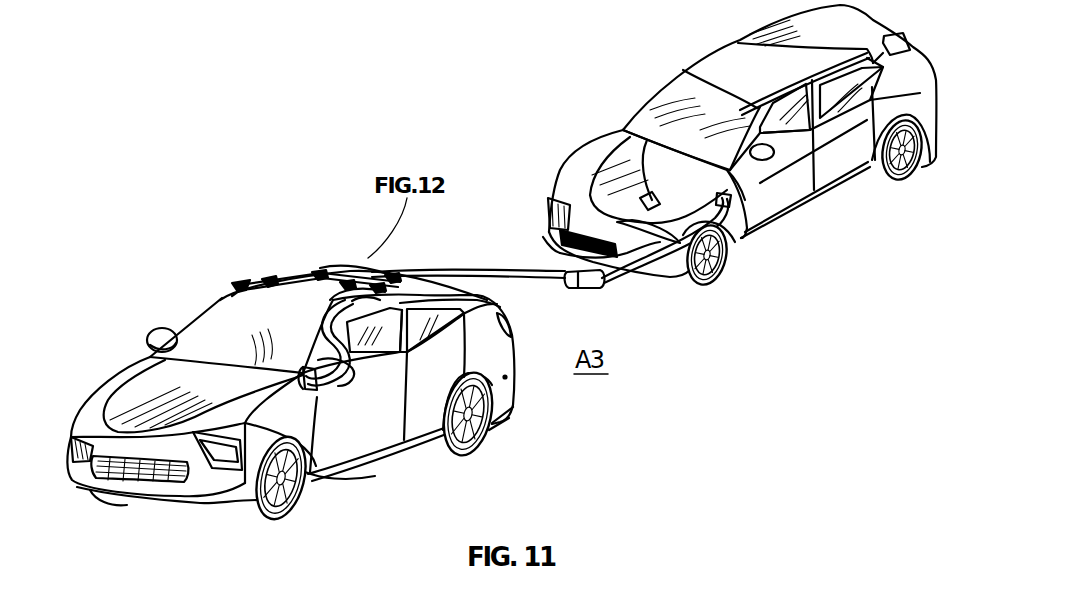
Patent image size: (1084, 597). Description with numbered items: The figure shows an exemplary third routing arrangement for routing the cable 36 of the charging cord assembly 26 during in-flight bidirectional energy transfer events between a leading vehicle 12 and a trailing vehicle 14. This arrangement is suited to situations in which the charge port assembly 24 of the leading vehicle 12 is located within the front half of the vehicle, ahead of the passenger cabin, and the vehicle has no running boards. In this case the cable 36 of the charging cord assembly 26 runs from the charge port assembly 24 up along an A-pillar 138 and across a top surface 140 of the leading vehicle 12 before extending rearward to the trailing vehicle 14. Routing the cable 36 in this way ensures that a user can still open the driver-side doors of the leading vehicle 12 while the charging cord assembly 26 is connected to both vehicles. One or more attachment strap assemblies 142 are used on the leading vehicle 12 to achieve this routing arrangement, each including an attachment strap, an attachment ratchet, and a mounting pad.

The leading vehicle 12 is at (292, 262).
The trailing vehicle 14 is at (738, 26).
The charge port assembly 24 is at (300, 368).
The charging cord assembly 26 is at (513, 262).
The cable 36 is at (630, 268).
The A-pillar 138 is at (342, 360).
The top surface 140 is at (262, 278).
The attachment strap assembly 142 is at (322, 270).